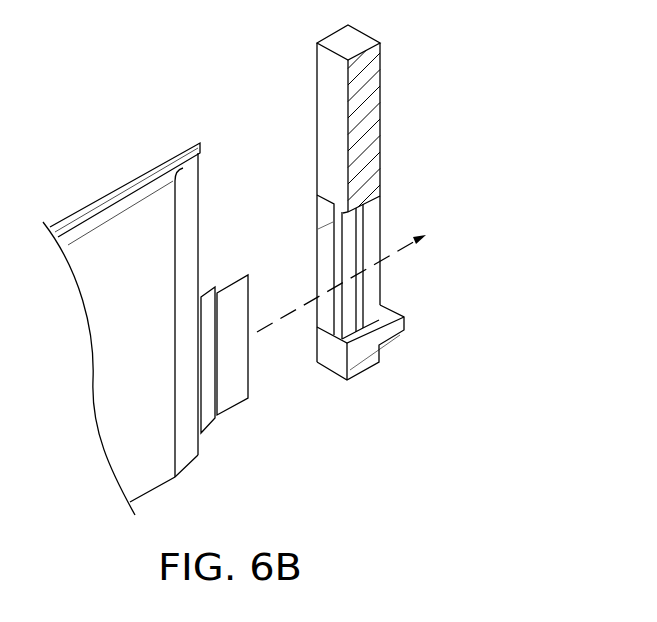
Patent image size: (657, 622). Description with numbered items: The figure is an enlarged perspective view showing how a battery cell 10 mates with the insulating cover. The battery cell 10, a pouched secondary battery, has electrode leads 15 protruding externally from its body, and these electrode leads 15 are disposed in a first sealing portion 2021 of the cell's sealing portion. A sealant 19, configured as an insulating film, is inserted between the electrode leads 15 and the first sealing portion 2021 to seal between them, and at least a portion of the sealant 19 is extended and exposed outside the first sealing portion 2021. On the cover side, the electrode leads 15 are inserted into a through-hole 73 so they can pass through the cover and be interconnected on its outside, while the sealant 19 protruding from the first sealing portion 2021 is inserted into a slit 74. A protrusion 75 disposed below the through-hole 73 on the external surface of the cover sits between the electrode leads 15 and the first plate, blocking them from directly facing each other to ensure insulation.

The battery cell 10 is at (153, 455).
The first sealing portion 2021 is at (181, 172).
The sealant 19 is at (207, 420).
The electrode leads 15 is at (232, 395).
The through-holes 73 is at (368, 300).
The slit 74 is at (352, 300).
The protrusion 75 is at (392, 337).